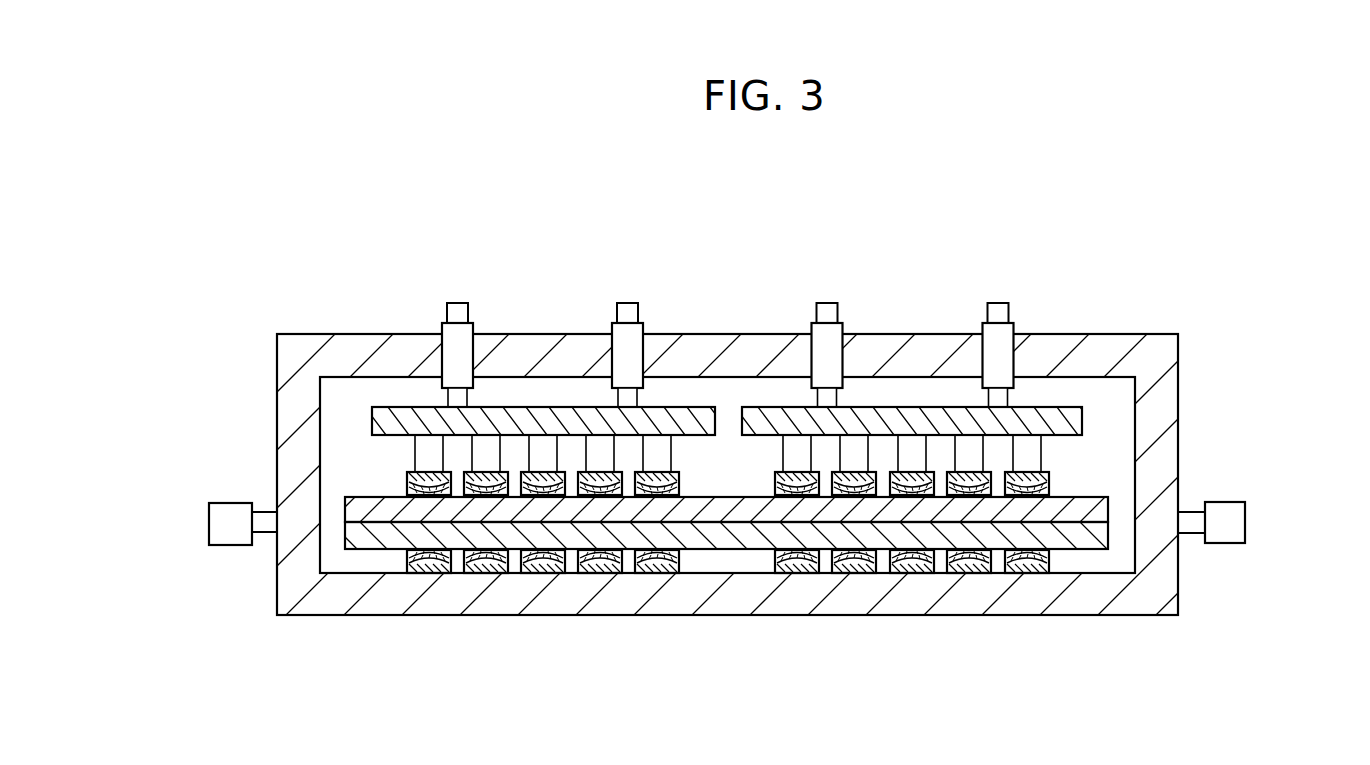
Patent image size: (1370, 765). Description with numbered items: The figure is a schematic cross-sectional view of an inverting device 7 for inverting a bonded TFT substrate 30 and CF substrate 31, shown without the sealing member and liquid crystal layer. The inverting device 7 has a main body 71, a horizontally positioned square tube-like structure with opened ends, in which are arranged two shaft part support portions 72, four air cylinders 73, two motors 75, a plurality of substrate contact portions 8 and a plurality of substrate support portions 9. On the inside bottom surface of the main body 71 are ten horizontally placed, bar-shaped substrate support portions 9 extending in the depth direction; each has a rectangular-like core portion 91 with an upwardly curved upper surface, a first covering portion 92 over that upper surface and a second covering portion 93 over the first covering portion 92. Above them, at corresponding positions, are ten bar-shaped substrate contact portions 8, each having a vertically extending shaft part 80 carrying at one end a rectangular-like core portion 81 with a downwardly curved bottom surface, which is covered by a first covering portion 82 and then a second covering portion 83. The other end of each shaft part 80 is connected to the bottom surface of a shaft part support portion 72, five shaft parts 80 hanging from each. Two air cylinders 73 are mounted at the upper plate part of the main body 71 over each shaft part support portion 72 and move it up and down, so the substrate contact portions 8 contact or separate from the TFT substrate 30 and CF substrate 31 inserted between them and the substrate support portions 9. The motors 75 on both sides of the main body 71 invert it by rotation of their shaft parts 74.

The inverting device 7 is at (685, 435).
The main body 71 is at (1170, 358).
The shaft part support portion 72 is at (682, 405).
The air cylinder 73 is at (812, 326).
The shaft part 74 is at (1190, 528).
The motor 75 is at (1245, 522).
The substrate contact portion 8 is at (823, 382).
The shaft part 80 is at (1044, 440).
The core portion 81 is at (1049, 478).
The first covering portion 82 is at (1049, 485).
The second covering portion 83 is at (1049, 491).
The TFT substrate 30 is at (403, 542).
The CF substrate 31 is at (377, 515).
The substrate support portion 9 is at (778, 626).
The core portion 91 is at (1013, 574).
The first covering portion 92 is at (1040, 565).
The second covering portion 93 is at (1040, 556).